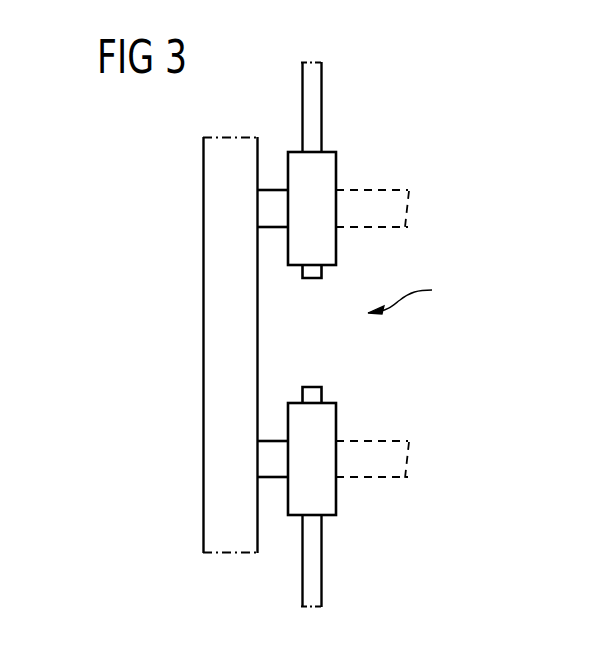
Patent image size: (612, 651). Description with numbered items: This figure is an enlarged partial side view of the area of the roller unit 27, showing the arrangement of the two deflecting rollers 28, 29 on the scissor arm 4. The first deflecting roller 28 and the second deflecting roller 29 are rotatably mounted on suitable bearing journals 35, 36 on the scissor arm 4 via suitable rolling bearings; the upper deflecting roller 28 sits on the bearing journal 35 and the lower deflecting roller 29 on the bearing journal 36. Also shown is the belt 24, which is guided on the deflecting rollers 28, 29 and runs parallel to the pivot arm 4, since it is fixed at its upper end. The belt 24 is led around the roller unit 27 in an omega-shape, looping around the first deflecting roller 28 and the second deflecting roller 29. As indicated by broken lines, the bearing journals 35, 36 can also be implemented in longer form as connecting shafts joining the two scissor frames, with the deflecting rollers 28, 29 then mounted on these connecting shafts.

The scissor arm 4 is at (227, 295).
The belt 24 is at (323, 102).
The roller unit 27 is at (415, 295).
The first deflecting roller 28 is at (307, 185).
The second deflecting roller 29 is at (307, 423).
The bearing journal 35 is at (270, 208).
The bearing journal 36 is at (270, 458).